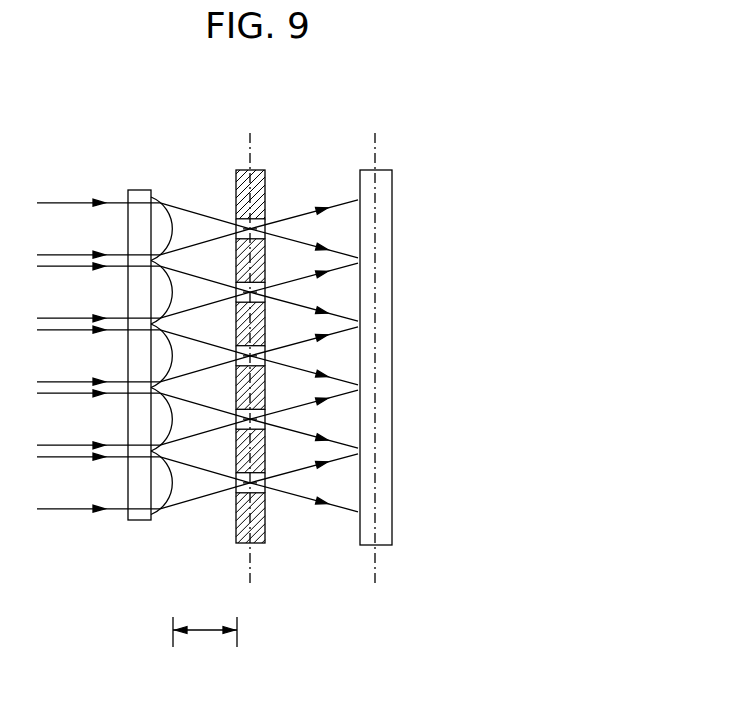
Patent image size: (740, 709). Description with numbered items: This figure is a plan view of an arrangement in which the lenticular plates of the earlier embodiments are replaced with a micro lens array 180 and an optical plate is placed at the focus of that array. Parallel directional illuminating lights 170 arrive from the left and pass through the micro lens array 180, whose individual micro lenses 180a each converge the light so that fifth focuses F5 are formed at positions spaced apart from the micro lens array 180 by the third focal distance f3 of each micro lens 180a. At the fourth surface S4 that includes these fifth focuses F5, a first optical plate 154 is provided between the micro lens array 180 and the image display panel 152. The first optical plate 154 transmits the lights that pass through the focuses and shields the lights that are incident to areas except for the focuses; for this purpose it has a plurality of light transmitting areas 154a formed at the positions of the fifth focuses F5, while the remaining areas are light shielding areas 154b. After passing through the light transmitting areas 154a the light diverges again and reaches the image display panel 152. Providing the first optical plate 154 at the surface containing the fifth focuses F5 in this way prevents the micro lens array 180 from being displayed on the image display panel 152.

The directional illuminating lights 170 is at (65, 200).
The micro lens array 180 is at (142, 188).
The micro lens 180a is at (165, 207).
The first optical plate 154 is at (242, 168).
The light transmitting areas 154a is at (267, 515).
The light shielding areas 154b is at (241, 545).
The image display panel 152 is at (381, 168).
The fifth focuses F5 is at (266, 223).
The fourth surface S4 is at (252, 570).
The third focal distance f3 is at (205, 639).